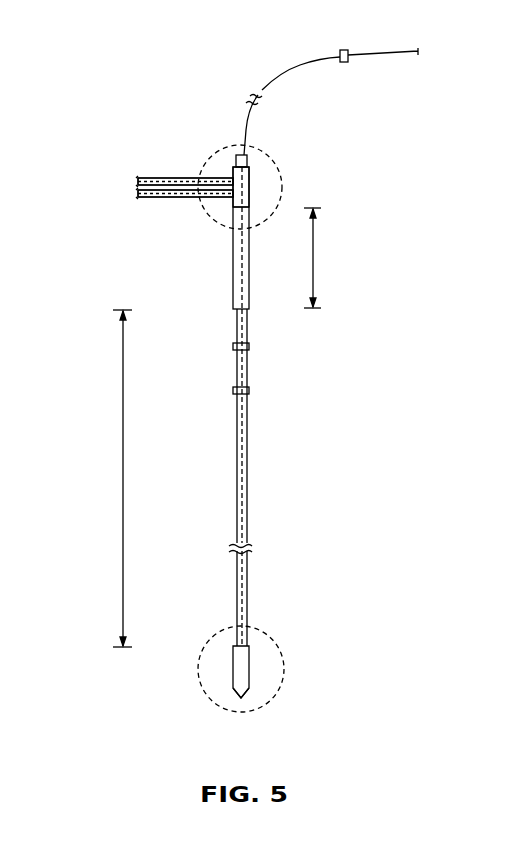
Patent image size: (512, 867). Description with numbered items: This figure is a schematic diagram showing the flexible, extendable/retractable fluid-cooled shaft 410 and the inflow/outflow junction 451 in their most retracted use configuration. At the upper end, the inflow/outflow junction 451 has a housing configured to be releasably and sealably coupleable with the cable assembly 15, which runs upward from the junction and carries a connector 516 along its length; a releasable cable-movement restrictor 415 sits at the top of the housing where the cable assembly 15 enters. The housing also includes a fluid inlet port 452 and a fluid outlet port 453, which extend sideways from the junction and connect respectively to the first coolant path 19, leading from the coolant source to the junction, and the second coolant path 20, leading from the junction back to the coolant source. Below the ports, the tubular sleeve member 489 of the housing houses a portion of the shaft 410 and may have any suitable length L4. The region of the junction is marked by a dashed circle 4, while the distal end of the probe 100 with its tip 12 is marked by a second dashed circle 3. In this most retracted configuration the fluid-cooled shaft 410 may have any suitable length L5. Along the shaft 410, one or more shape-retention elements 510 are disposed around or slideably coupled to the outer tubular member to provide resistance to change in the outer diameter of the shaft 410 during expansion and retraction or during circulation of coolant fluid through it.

The cable assembly 15 is at (247, 118).
The connector 516 is at (343, 50).
The detail circle FIG. 4 is at (283, 170).
The releasable cable-movement restrictor 415 is at (247, 158).
The tubular sleeve member 489 is at (232, 262).
The inflow/outflow junction 451 is at (262, 193).
The fluid inlet port 452 is at (229, 172).
The fluid outlet port 453 is at (230, 200).
The first coolant path 19 is at (132, 182).
The second coolant path 20 is at (132, 193).
The length of tubular sleeve member L4 is at (333, 258).
The length of fluid-cooled shaft in most retracted configuration L5 is at (102, 478).
The flexible, extendable/retractable fluid-cooled shaft 410 is at (262, 462).
The shape-retention elements 510 is at (250, 390).
The detail circle FIG. 3 is at (285, 670).
The probe 100 is at (228, 660).
The distal tip 12 is at (240, 672).